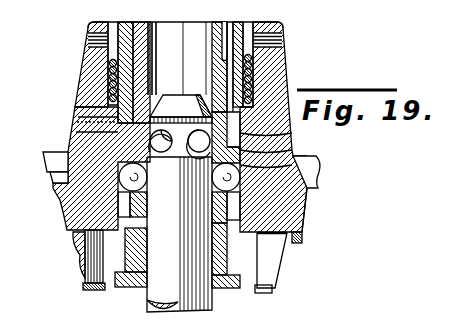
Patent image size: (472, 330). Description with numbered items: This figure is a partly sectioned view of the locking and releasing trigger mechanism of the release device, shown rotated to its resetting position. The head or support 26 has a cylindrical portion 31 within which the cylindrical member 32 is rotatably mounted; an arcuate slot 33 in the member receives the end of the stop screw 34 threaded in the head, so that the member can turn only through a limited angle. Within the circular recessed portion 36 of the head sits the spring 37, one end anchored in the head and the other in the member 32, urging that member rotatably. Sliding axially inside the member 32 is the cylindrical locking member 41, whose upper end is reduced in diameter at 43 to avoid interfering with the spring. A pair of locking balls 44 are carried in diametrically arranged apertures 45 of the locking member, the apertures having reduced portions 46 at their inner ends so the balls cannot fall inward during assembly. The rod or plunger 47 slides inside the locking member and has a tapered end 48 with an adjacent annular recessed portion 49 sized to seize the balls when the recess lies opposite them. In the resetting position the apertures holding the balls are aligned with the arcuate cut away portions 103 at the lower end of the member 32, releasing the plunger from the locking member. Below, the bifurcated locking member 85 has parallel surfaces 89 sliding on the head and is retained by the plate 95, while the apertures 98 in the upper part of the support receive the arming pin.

The head or support 26 is at (318, 190).
The cylindrical portion 31 is at (80, 100).
The cylindrical member 32 is at (241, 23).
The arcuate slot 33 is at (292, 149).
The stop screw 34 is at (78, 117).
The circular recessed portion 36 is at (87, 53).
The spring 37 is at (288, 82).
The cylindrical locking member 41 is at (209, 23).
The reduced diameter portion 43 is at (143, 23).
The locking balls 44 is at (212, 170).
The apertures 45 is at (306, 172).
The reduced portions 46 is at (183, 197).
The rod or plunger 47 is at (147, 305).
The tapered end 48 is at (199, 97).
The annular recessed portion 49 is at (76, 132).
The bifurcated locking member 85 is at (240, 271).
The parallel surfaces 89 is at (207, 262).
The plate 95 is at (220, 287).
The apertures 98 is at (86, 40).
The arcuate cut away portions 103 is at (44, 155).